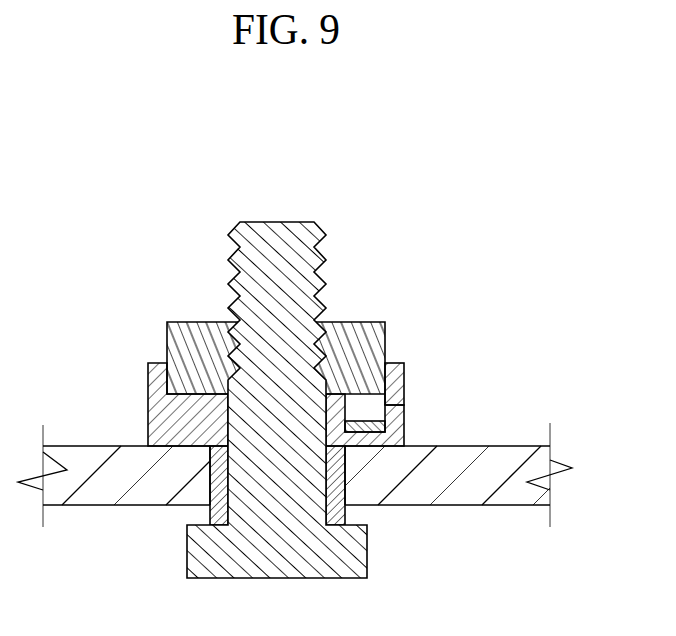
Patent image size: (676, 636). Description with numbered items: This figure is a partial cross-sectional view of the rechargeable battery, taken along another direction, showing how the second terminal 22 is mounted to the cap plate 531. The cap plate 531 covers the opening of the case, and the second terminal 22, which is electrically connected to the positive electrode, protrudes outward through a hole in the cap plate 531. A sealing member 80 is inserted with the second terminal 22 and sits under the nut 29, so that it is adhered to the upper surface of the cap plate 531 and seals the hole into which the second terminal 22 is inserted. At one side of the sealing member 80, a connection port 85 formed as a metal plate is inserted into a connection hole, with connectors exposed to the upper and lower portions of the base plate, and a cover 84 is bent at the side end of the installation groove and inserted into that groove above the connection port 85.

The second terminal 22 is at (280, 243).
The nut 29 is at (351, 336).
The sealing member 80 is at (132, 382).
The cover 84 is at (404, 372).
The connection port 85 is at (365, 431).
The cap plate 531 is at (505, 466).